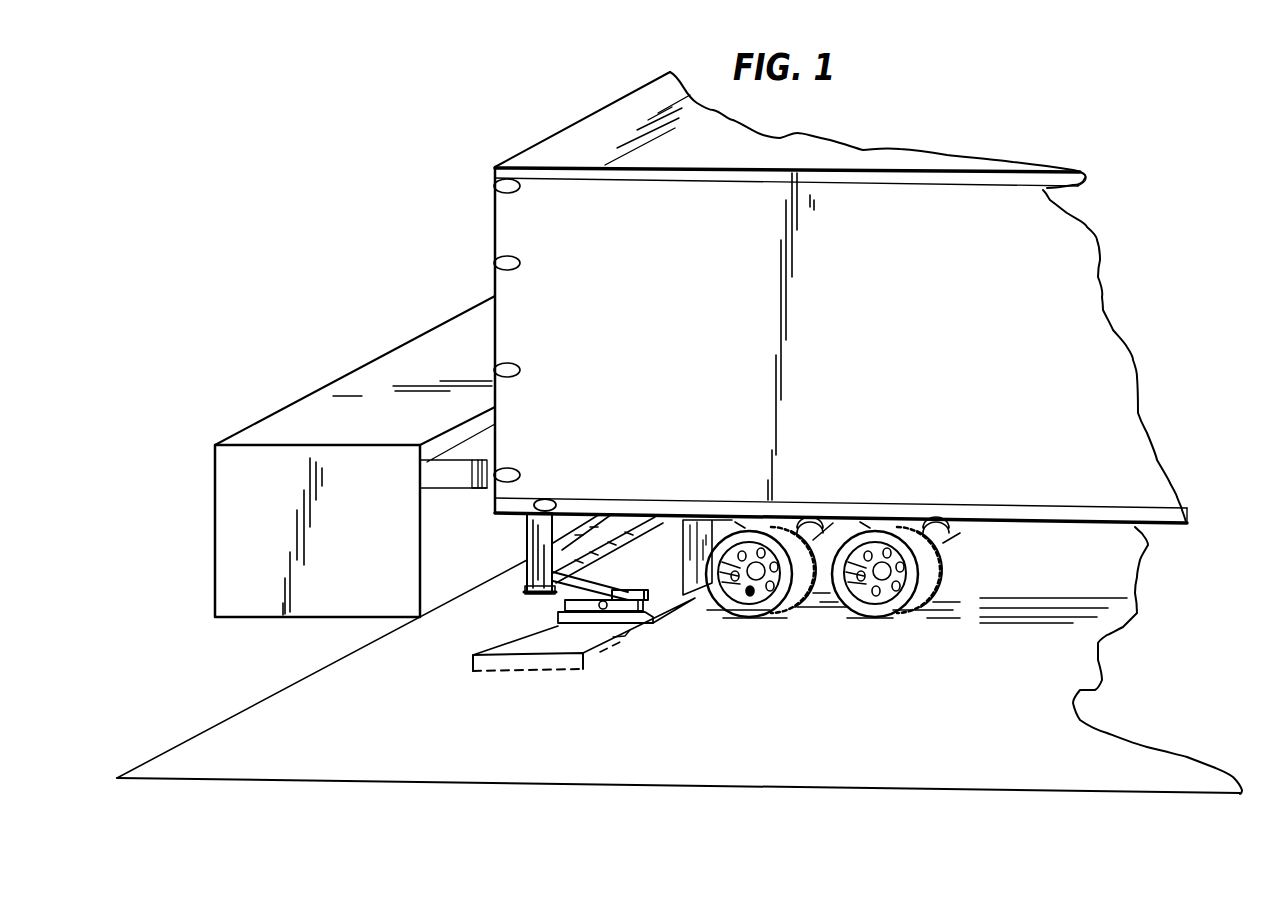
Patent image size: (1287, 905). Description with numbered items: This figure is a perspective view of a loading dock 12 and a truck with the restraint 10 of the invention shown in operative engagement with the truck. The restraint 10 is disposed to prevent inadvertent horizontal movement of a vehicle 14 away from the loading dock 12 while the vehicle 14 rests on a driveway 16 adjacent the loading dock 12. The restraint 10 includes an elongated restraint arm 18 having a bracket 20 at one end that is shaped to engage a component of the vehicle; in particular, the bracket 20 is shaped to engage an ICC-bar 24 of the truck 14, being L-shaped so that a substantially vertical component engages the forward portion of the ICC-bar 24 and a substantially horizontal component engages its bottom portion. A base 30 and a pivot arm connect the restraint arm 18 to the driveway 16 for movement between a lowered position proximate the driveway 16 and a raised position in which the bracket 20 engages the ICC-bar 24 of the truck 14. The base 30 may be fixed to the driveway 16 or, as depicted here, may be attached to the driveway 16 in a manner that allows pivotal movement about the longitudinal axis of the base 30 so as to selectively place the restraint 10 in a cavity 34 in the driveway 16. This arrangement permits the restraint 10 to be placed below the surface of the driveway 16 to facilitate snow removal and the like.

The restraint 10 is at (573, 605).
The loading dock 12 is at (270, 572).
The vehicle 14 is at (1023, 488).
The driveway 16 is at (557, 760).
The restraint arm 18 is at (587, 582).
The bracket 20 is at (537, 591).
The ICC-bar 24 is at (527, 542).
The base 30 is at (658, 607).
The cavity 34 is at (573, 641).